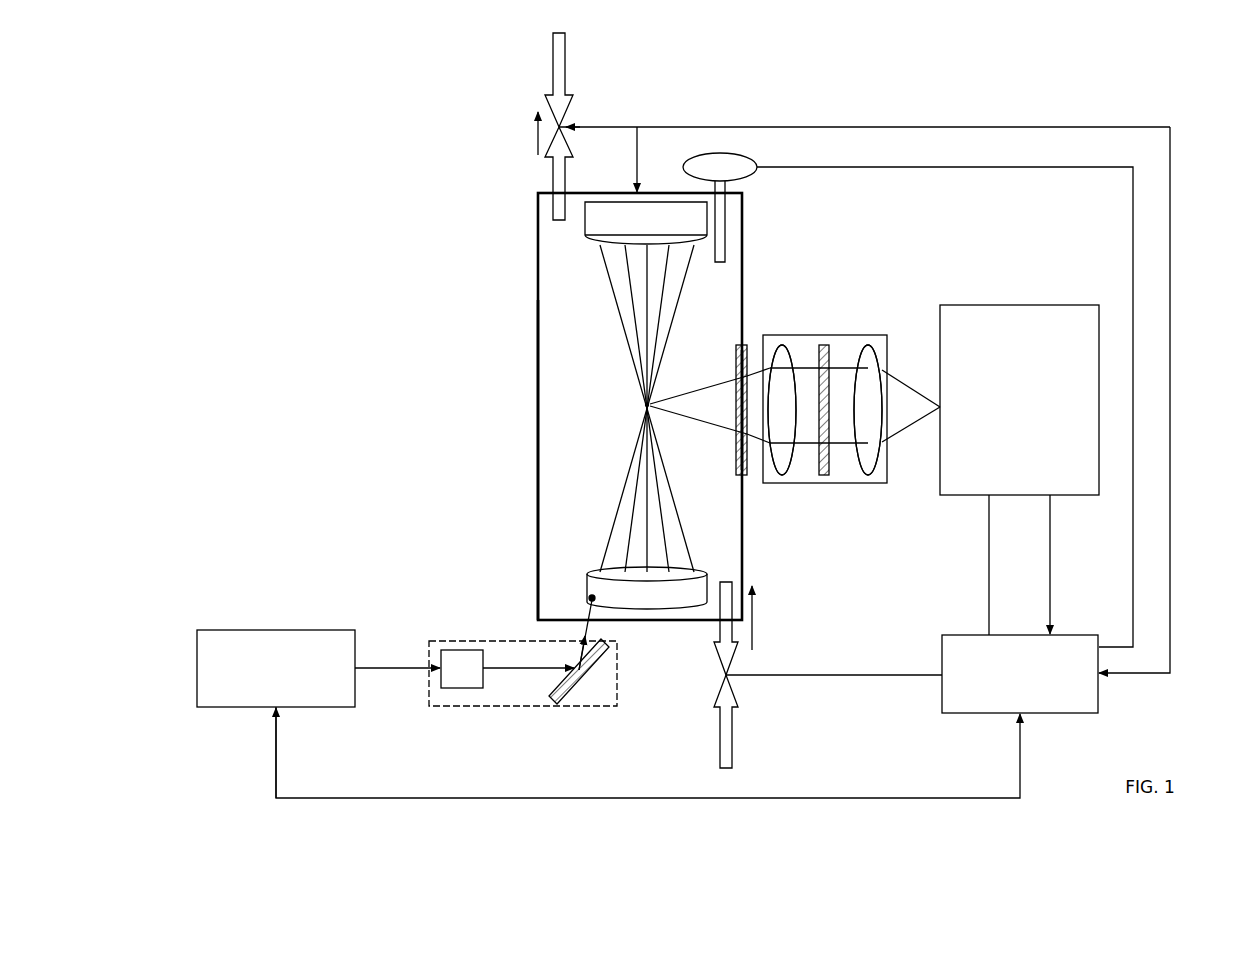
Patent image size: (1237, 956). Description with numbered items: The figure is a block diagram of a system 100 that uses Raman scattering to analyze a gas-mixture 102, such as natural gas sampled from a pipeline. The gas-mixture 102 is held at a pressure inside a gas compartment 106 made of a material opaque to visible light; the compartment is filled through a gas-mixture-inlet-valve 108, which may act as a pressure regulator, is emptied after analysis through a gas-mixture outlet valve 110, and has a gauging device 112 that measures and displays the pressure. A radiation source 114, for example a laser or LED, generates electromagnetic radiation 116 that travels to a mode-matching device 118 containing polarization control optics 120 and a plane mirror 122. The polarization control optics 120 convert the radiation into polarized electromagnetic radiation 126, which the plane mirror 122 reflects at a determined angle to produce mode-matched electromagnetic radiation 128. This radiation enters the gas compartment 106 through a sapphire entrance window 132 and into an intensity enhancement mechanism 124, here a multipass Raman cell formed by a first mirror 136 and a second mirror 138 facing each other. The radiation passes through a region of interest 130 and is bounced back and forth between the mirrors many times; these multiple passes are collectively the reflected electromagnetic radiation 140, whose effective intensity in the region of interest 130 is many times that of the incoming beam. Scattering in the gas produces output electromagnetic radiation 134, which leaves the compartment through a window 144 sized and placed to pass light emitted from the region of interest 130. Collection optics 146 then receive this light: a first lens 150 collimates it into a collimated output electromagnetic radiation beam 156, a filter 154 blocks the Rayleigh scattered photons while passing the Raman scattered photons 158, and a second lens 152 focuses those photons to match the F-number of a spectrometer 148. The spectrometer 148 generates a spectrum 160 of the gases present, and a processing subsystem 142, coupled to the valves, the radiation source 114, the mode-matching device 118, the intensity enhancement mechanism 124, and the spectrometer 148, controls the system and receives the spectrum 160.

The system 100 is at (278, 78).
The gas-mixture 102 is at (555, 357).
The gas compartment 106 is at (536, 597).
The gas-mixture-inlet-valve 108 is at (735, 728).
The gas-mixture outlet valve 110 is at (568, 40).
The gauging device 112 is at (721, 152).
The radiation source 114 is at (272, 629).
The electromagnetic radiation 116 is at (393, 672).
The mode-matching device 118 is at (523, 708).
The polarization control optics 120 is at (462, 690).
The plane mirror 122 is at (575, 690).
The intensity enhancement mechanism 124 is at (585, 571).
The polarized electromagnetic radiation 126 is at (545, 667).
The mode-matched electromagnetic radiation 128 is at (580, 640).
The region of interest 130 is at (645, 406).
The sapphire entrance window 132 is at (596, 600).
The output electromagnetic radiation 134 is at (735, 470).
The first mirror 136 is at (652, 200).
The second mirror 138 is at (633, 602).
The reflected electromagnetic radiation 140 is at (633, 505).
The processing subsystem 142 is at (958, 634).
The window 144 is at (742, 343).
The collection optics 146 is at (885, 480).
The spectrometer 148 is at (1022, 304).
The first lens 150 is at (781, 346).
The second lens 152 is at (870, 344).
The filter 154 is at (825, 344).
The collimated output electromagnetic radiation beam 156 is at (808, 438).
The Raman scattered photons 158 is at (841, 438).
The spectrum 160 is at (1052, 560).